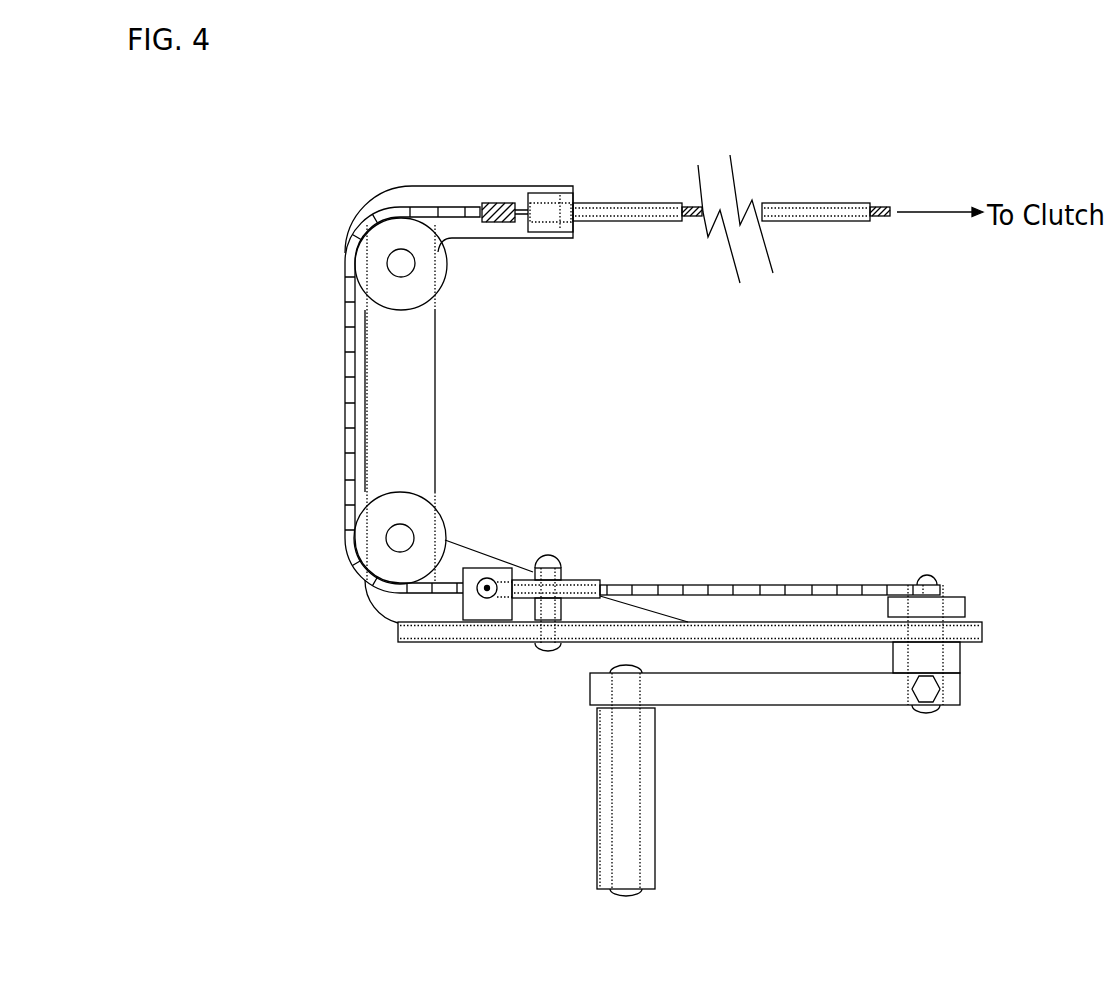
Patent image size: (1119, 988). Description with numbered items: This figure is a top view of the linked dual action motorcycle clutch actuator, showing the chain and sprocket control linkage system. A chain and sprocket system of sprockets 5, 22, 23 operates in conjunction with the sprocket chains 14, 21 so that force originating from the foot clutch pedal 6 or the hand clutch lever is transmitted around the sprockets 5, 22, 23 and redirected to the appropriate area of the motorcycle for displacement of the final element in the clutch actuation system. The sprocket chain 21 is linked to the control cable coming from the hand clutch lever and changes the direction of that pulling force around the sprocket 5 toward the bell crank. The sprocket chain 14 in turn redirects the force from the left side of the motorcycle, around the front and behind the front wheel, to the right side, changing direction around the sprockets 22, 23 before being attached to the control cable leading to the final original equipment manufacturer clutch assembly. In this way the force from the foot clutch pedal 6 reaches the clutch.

The sprocket chain 14 is at (345, 420).
The sprocket 23 is at (425, 273).
The sprocket 22 is at (428, 535).
The sprocket 5 is at (583, 580).
The sprocket chain 21 is at (742, 588).
The foot clutch pedal 6 is at (580, 675).